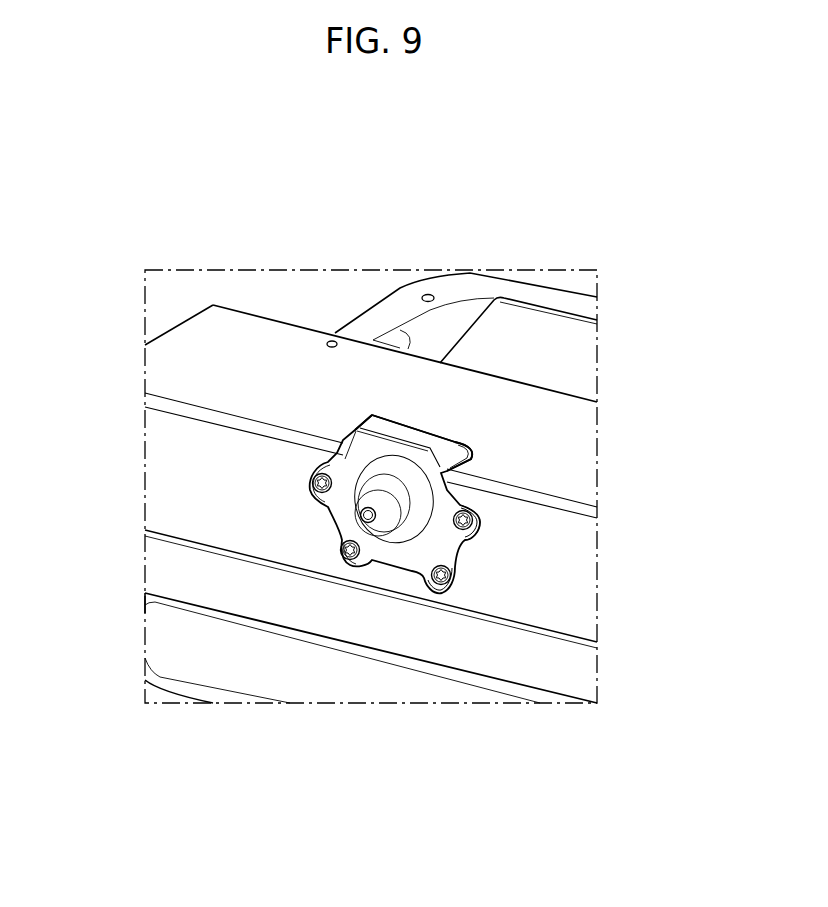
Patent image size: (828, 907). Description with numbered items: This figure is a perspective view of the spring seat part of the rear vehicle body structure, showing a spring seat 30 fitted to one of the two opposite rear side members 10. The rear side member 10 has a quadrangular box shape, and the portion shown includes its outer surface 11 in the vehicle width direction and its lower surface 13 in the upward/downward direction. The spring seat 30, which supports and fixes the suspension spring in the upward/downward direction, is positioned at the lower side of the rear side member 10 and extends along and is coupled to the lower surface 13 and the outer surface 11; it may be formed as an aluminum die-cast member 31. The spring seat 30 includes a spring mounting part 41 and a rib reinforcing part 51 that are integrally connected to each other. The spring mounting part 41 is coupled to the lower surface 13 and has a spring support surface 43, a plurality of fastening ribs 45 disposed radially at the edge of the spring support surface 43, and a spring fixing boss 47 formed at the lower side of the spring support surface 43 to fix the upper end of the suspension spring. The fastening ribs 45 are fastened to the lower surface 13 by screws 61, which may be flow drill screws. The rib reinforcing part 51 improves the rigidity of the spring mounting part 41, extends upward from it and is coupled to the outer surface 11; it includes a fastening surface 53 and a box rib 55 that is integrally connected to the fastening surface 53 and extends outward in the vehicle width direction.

The rear side member 10 is at (558, 378).
The outer surface 11 is at (570, 445).
The lower surface 13 is at (548, 548).
The spring seat 30 is at (364, 172).
The aluminum die-cast member 31 is at (78, 422).
The spring mounting part 41 is at (318, 519).
The spring support surface 43 is at (375, 555).
The fastening rib 45 is at (483, 528).
The spring fixing boss 47 is at (383, 512).
The rib reinforcing part 51 is at (349, 414).
The fastening surface 53 is at (462, 448).
The box rib 55 is at (408, 433).
The screw 61 is at (441, 575).